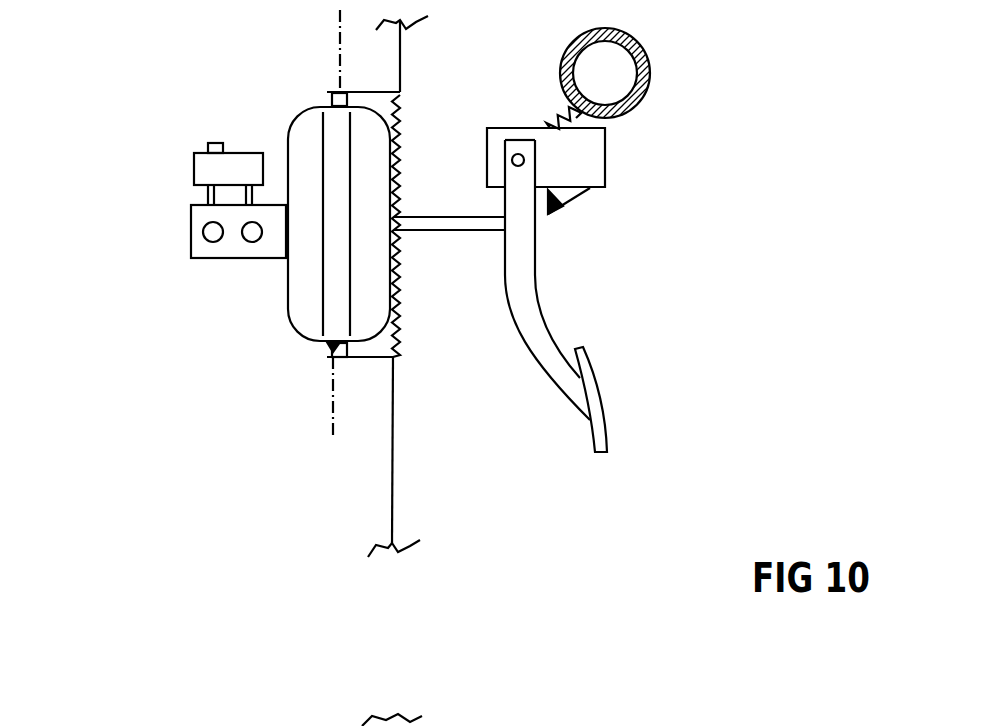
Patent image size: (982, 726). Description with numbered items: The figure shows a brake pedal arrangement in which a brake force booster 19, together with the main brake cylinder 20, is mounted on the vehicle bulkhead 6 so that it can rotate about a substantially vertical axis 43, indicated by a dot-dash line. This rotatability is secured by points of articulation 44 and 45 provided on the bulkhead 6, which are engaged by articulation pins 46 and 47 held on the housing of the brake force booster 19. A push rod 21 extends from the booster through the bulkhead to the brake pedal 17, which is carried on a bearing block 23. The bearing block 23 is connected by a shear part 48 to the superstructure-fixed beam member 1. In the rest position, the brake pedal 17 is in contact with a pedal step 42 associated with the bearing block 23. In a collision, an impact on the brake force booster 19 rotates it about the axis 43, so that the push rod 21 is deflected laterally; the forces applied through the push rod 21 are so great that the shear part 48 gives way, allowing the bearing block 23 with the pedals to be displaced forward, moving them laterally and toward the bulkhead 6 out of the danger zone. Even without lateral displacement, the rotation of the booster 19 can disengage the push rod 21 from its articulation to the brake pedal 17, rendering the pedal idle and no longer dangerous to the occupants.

The beam member 1 is at (650, 60).
The bulkhead 6 is at (392, 448).
The brake pedal 17 is at (533, 341).
The brake force booster 19 is at (312, 202).
The main brake cylinder 20 is at (229, 247).
The push rod 21 is at (470, 226).
The bearing block 23 is at (578, 151).
The pedal step 42 is at (556, 206).
The vertical axis 43 is at (338, 62).
The point of articulation 44 is at (330, 94).
The point of articulation 45 is at (322, 355).
The articulation pin 46 is at (338, 106).
The articulation pin 47 is at (327, 345).
The shear part 48 is at (578, 128).